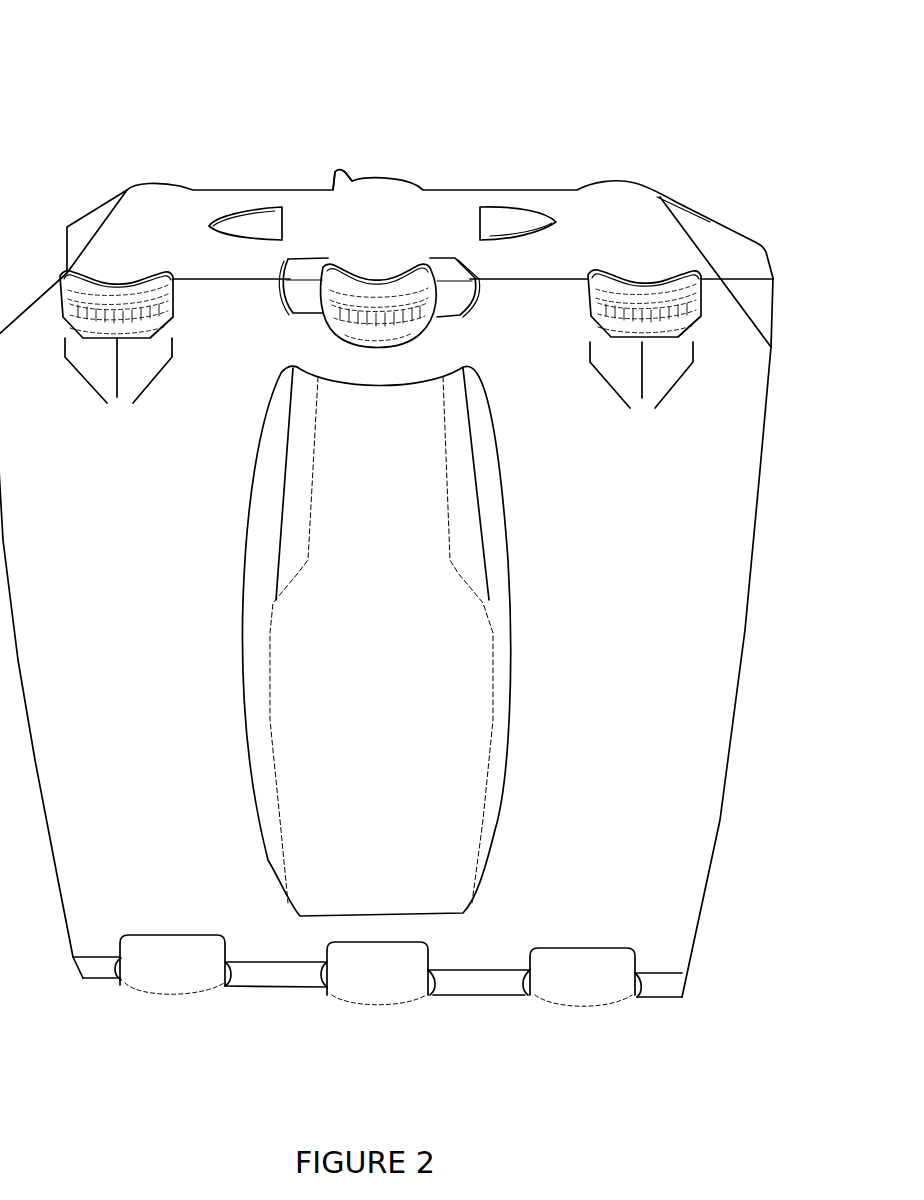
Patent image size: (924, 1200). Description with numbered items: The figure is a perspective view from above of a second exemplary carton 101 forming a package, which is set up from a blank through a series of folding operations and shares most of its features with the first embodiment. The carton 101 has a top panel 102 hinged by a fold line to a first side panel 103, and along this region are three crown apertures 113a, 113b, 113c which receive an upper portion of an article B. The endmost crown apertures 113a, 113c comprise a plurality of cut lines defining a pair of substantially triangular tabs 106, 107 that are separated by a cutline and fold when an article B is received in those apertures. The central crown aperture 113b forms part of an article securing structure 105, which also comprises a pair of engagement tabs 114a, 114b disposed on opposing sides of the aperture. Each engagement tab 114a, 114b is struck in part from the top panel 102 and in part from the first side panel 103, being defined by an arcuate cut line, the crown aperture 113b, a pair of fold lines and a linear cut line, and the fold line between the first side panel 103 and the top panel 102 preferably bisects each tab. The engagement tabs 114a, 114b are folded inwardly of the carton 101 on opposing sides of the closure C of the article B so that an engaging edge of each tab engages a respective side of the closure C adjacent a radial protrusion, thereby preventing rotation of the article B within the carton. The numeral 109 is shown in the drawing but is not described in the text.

The carton 101 is at (106, 128).
The top panel 102 is at (626, 231).
The first side panel 103 is at (126, 620).
The article securing structure 105 is at (315, 254).
The tab 106 is at (625, 373).
The tab 107 is at (667, 360).
The bottom tab 109 is at (577, 983).
The crown aperture 113a is at (118, 288).
The crown aperture 113b is at (377, 285).
The crown aperture 113c is at (643, 283).
The engagement tab 114a is at (305, 300).
The engagement tab 114b is at (457, 295).
The article B is at (382, 647).
The closure C is at (677, 297).